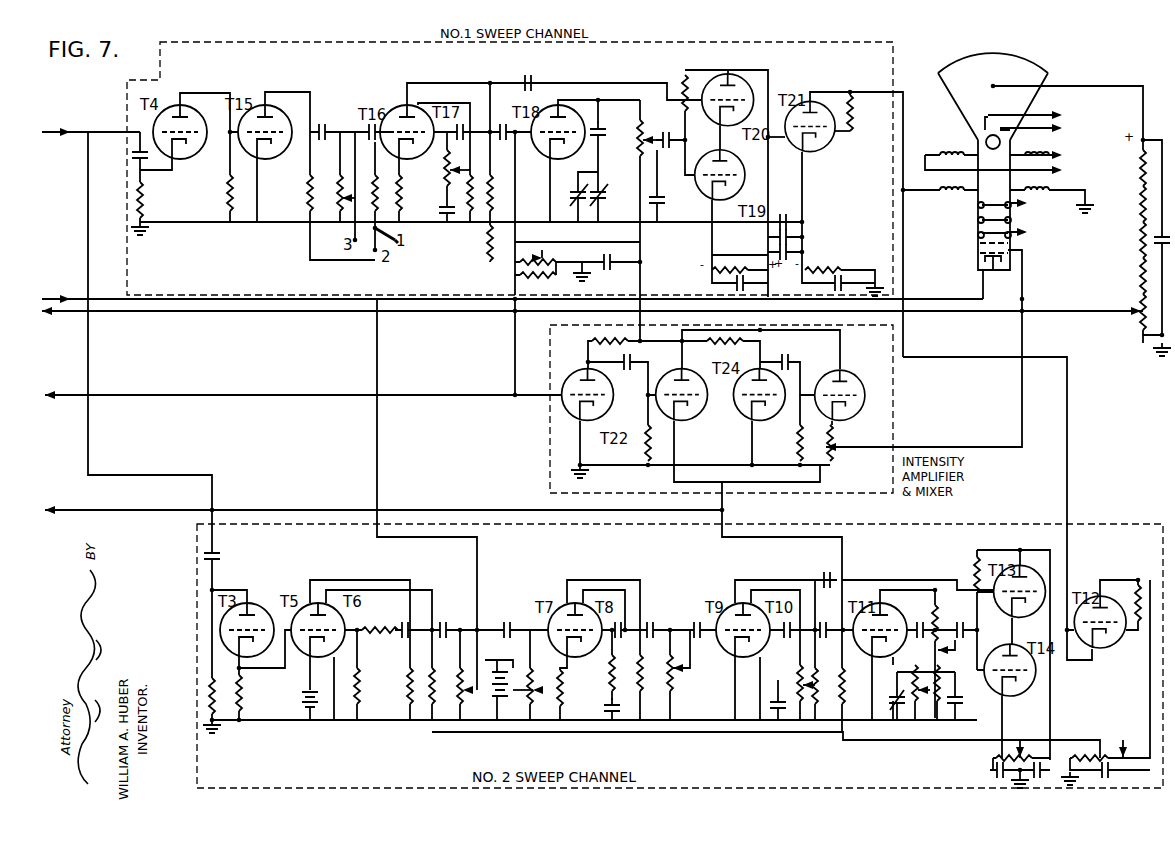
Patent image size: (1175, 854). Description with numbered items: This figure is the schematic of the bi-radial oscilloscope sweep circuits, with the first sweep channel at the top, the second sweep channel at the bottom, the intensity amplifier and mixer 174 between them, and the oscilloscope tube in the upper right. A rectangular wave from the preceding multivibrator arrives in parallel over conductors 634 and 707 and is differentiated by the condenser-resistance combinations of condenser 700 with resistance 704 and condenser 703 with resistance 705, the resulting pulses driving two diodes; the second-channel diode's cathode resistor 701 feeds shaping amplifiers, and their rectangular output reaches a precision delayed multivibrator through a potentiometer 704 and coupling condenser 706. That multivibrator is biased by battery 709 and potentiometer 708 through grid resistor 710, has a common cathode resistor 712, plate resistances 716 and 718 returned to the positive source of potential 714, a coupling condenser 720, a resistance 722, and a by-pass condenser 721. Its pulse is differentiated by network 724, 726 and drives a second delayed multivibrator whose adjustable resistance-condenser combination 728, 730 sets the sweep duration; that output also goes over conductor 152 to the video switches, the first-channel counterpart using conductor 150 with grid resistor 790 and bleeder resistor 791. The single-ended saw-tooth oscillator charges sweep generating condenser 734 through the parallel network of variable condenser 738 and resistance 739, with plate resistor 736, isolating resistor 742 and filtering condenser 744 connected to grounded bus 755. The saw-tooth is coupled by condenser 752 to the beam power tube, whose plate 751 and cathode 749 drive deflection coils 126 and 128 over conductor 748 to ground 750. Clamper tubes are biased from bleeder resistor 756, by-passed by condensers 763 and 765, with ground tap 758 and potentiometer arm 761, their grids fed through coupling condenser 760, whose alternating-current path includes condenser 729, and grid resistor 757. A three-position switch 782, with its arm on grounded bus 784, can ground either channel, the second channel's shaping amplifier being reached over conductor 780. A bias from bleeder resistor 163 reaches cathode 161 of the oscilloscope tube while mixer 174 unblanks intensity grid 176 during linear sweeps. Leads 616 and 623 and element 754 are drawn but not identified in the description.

The conductor 634 is at (42, 132).
The condenser 703 is at (134, 143).
The resistance 705 is at (142, 204).
The bus lead 616 is at (44, 299).
The bus lead 623 is at (82, 312).
The conductor 150 is at (80, 395).
The conductor 152 is at (60, 510).
The conductor 707 is at (138, 475).
The conductor 780 is at (378, 470).
The conductor 748 is at (1068, 428).
The grounded bus 784 is at (385, 230).
The three-position switch 782 is at (399, 244).
The grid resistor 790 is at (538, 276).
The grounded bleeder resistor 791 is at (560, 263).
The deflection coil 126 is at (958, 193).
The deflection coil 128 is at (1030, 195).
The ground 750 is at (1078, 196).
The bleeder resistor 163 is at (1140, 226).
The intensity grid 176 is at (976, 260).
The cathode 161 is at (990, 275).
The intensity amplifier and mixer 174 is at (550, 432).
The condenser 700 is at (220, 558).
The resistance 704 is at (210, 693).
The cathode resistor 701 is at (242, 693).
The coupling condenser 706 is at (508, 625).
The biasing battery 709 is at (512, 672).
The grid resistor 710 is at (530, 660).
The potentiometer 708 is at (531, 708).
The cathode resistor 712 is at (562, 688).
The resistance 722 is at (614, 678).
The by-pass condenser 721 is at (611, 713).
The condenser 720 is at (641, 610).
The plate resistance 716 is at (641, 688).
The plate resistance 718 is at (641, 706).
The differentiating network condenser 724 is at (692, 625).
The differentiating network resistance 726 is at (703, 713).
The resistance 728 is at (790, 690).
The condenser 729 is at (772, 712).
The condenser 730 is at (806, 585).
The coupling condenser 760 is at (836, 570).
The sweep generating condenser 734 is at (918, 620).
The plate resistor 736 is at (938, 600).
The coupling condenser 752 is at (964, 612).
The resistance 739 is at (914, 672).
The variable condenser 738 is at (897, 694).
The isolating resistor 742 is at (939, 670).
The filtering condenser 744 is at (959, 703).
The grounded bus 755 is at (958, 720).
The grid resistor 757 is at (974, 562).
The bleeder resistor 756 is at (1003, 725).
The ground tap 758 is at (1020, 745).
The potentiometer arm 761 is at (990, 758).
The condenser 763 is at (992, 772).
The grounded condenser 765 is at (1030, 774).
The positive source of potential 714 is at (1138, 724).
The plate 751 is at (1104, 586).
The cathode 754 is at (1110, 645).
The cathode 749 is at (1094, 661).